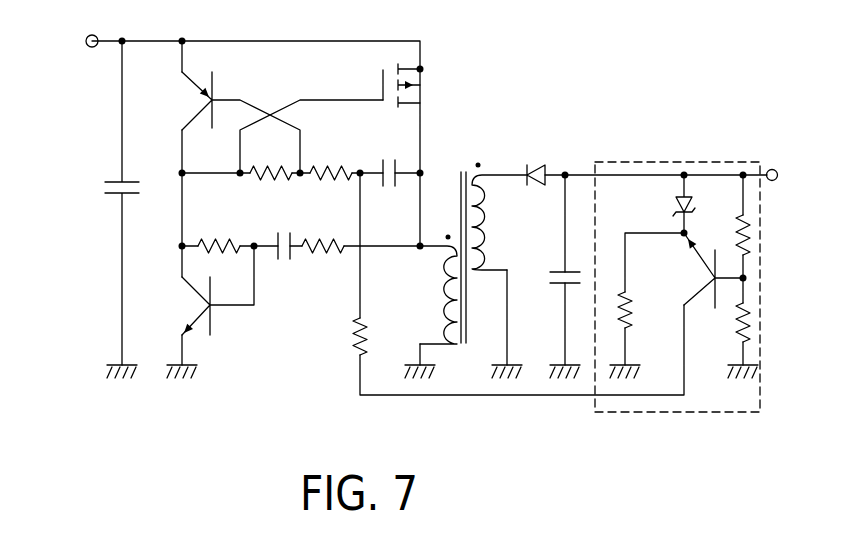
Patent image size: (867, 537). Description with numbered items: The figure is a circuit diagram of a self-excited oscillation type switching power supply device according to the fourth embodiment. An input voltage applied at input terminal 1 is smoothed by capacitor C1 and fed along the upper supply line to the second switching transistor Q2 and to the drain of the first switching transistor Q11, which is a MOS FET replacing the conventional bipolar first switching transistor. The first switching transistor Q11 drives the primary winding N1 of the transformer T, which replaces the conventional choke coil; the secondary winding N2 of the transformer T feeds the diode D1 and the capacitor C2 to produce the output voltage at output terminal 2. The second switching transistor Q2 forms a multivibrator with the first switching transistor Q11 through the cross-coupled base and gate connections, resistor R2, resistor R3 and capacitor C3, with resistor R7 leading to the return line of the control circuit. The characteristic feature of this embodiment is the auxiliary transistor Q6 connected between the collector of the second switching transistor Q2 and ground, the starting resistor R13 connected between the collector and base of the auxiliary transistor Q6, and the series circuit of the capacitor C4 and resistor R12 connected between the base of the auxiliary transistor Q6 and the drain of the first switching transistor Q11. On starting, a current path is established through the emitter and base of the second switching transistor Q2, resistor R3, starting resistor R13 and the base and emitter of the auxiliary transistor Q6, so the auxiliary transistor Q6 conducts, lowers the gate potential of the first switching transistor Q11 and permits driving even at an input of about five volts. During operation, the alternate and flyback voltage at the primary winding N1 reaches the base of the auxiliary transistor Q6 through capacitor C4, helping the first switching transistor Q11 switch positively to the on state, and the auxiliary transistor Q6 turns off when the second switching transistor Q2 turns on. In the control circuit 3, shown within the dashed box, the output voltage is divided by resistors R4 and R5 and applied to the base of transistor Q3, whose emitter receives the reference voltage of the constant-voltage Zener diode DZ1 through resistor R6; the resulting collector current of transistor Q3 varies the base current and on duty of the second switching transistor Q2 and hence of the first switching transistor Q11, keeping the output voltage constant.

The input terminal 1 is at (87, 35).
The output terminal 2 is at (777, 170).
The control circuit 3 is at (760, 367).
The capacitor C1 is at (110, 203).
The capacitor C2 is at (554, 295).
The capacitor C3 is at (390, 155).
The capacitor C4 is at (285, 270).
The second switching transistor Q2 is at (177, 100).
The transistor Q3 is at (680, 270).
The auxiliary transistor Q6 is at (176, 304).
The first switching transistor Q11 is at (431, 84).
The resistor R2 is at (331, 153).
The resistor R3 is at (271, 193).
The resistor R4 is at (728, 222).
The resistor R5 is at (725, 330).
The resistor R6 is at (640, 324).
The resistor R7 is at (340, 349).
The resistor R12 is at (326, 226).
The starting resistor R13 is at (216, 226).
The diode D1 is at (535, 155).
The constant-voltage Zener diode DZ1 is at (656, 199).
The transformer T is at (465, 165).
The primary winding N1 is at (427, 295).
The secondary winding N2 is at (500, 222).